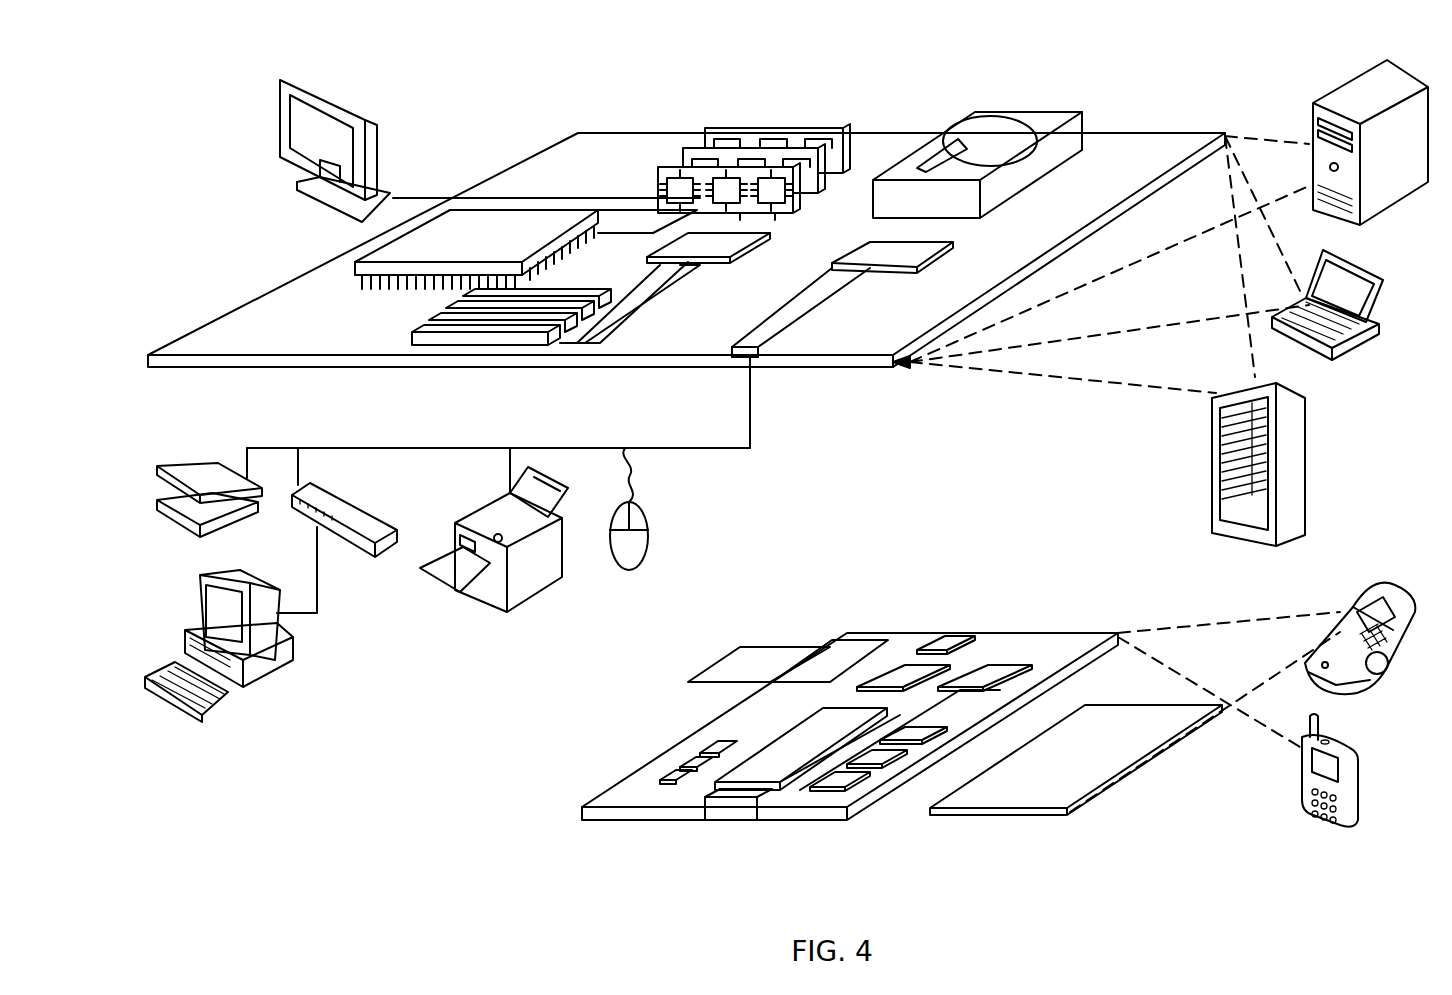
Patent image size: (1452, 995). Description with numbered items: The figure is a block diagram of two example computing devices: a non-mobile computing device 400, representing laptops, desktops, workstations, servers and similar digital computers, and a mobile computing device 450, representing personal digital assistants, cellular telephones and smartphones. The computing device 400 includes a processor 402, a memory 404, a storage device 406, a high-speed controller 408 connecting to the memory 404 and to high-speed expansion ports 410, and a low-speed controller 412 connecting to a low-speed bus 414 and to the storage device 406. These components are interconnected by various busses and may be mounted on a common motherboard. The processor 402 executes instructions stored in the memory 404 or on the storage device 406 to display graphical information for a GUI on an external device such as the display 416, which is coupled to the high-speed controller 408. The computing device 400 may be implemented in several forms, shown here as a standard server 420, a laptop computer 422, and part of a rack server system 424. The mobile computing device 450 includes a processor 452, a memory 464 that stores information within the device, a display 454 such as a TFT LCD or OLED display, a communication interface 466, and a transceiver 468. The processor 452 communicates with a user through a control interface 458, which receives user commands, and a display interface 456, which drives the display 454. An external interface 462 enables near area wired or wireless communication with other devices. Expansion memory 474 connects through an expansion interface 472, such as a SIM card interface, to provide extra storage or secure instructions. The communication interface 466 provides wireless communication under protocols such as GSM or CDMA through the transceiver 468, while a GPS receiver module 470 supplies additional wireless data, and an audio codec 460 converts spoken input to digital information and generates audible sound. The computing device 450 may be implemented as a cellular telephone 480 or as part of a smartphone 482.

The computing device 400 is at (181, 91).
The processor 402 is at (356, 264).
The memory 404 is at (710, 128).
The storage device 406 is at (975, 114).
The high-speed controller 408 is at (672, 245).
The high-speed expansion ports 410 is at (437, 325).
The low-speed controller 412 is at (872, 247).
The low-speed bus 414 is at (758, 355).
The display 416 is at (288, 78).
The standard server 420 is at (1313, 119).
The laptop computer 422 is at (1383, 291).
The rack server system 424 is at (1212, 494).
The computing device 450 is at (554, 820).
The processor 452 is at (773, 775).
The display 454 is at (1028, 790).
The display interface 456 is at (852, 793).
The control interface 458 is at (908, 768).
The audio codec 460 is at (912, 740).
The external interface 462 is at (733, 813).
The memory 464 is at (680, 764).
The communication interface 466 is at (903, 675).
The transceiver 468 is at (987, 675).
The GPS receiver module 470 is at (960, 650).
The expansion interface 472 is at (817, 649).
The expansion memory 474 is at (740, 649).
The cellular telephone 480 is at (1365, 583).
The smartphone 482 is at (1302, 777).